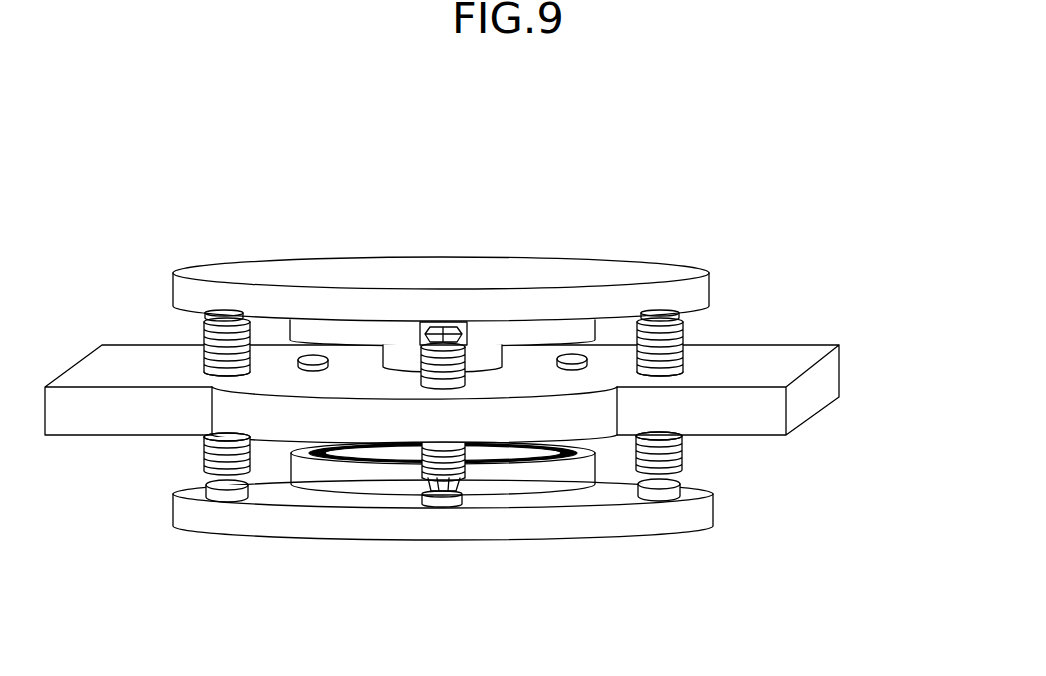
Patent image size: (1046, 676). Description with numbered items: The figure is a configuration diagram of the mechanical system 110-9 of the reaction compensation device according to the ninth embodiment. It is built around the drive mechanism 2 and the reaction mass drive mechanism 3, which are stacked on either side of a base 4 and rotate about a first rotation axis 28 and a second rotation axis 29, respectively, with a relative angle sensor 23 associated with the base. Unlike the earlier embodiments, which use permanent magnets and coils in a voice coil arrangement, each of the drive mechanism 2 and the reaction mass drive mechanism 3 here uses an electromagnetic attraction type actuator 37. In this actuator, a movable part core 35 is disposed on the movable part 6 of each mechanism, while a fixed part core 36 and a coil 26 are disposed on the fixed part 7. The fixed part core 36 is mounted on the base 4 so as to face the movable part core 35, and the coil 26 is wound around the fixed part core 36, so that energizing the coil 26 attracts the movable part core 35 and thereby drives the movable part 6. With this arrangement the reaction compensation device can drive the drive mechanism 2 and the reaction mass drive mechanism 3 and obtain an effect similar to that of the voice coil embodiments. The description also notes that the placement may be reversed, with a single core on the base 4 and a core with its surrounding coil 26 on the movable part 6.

The mechanical system 110-9 is at (878, 178).
The drive mechanism 2 is at (585, 229).
The reaction mass drive mechanism 3 is at (586, 537).
The base 4 is at (797, 413).
The movable part 6 is at (468, 262).
The fixed part 7 is at (400, 358).
The relative angle sensor 23 is at (578, 373).
The coil 26 is at (676, 366).
The first rotation axis 28 is at (437, 322).
The second rotation axis 29 is at (522, 528).
The movable part core 35 is at (670, 318).
The fixed part core 36 is at (670, 340).
The electromagnetic attraction type actuator 37 is at (525, 373).